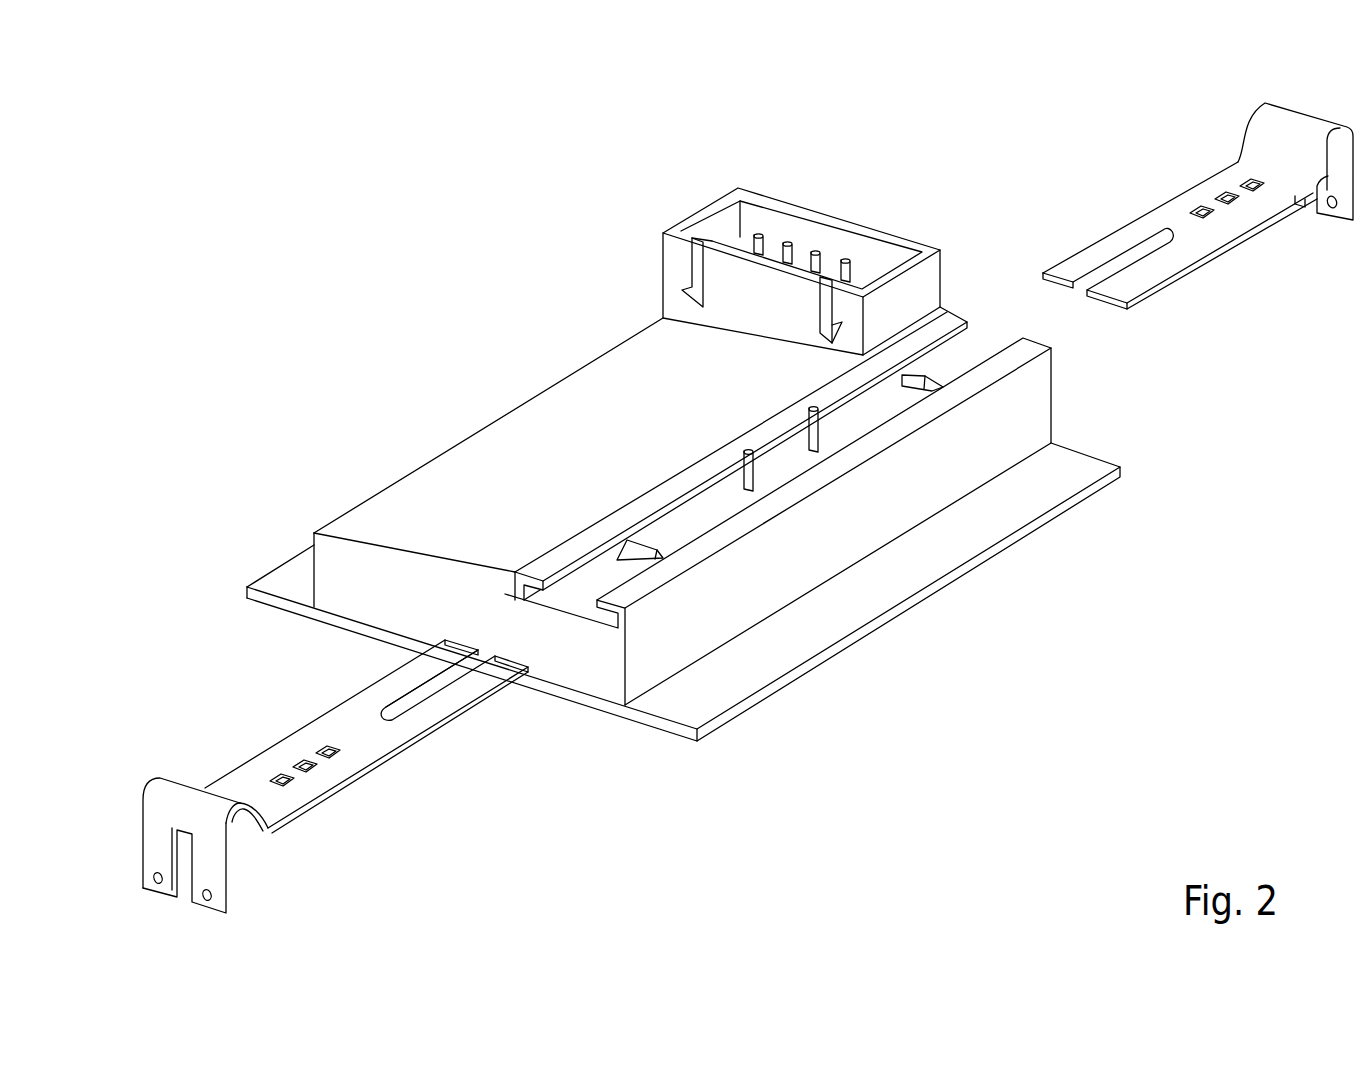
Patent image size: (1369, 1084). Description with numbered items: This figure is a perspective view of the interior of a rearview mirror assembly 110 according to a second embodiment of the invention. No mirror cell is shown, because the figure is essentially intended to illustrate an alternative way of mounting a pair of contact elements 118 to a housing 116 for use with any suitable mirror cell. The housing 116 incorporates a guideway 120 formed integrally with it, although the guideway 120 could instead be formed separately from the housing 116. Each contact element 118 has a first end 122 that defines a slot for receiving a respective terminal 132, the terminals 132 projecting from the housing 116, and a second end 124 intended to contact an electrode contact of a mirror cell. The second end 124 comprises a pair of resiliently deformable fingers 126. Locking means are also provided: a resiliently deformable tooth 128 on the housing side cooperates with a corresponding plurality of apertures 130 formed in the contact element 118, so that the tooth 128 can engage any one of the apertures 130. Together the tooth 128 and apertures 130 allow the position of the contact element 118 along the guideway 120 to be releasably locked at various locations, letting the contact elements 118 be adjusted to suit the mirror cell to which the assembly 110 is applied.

The mirror assembly 110 is at (508, 174).
The housing 116 is at (490, 410).
The contact element 118 is at (318, 730).
The guideway 120 is at (783, 466).
The first end 122 is at (407, 681).
The second end 124 is at (155, 803).
The resiliently deformable fingers 126 is at (150, 865).
The resiliently deformable tooth 128 is at (645, 557).
The apertures 130 is at (313, 762).
The terminal 132 is at (805, 425).